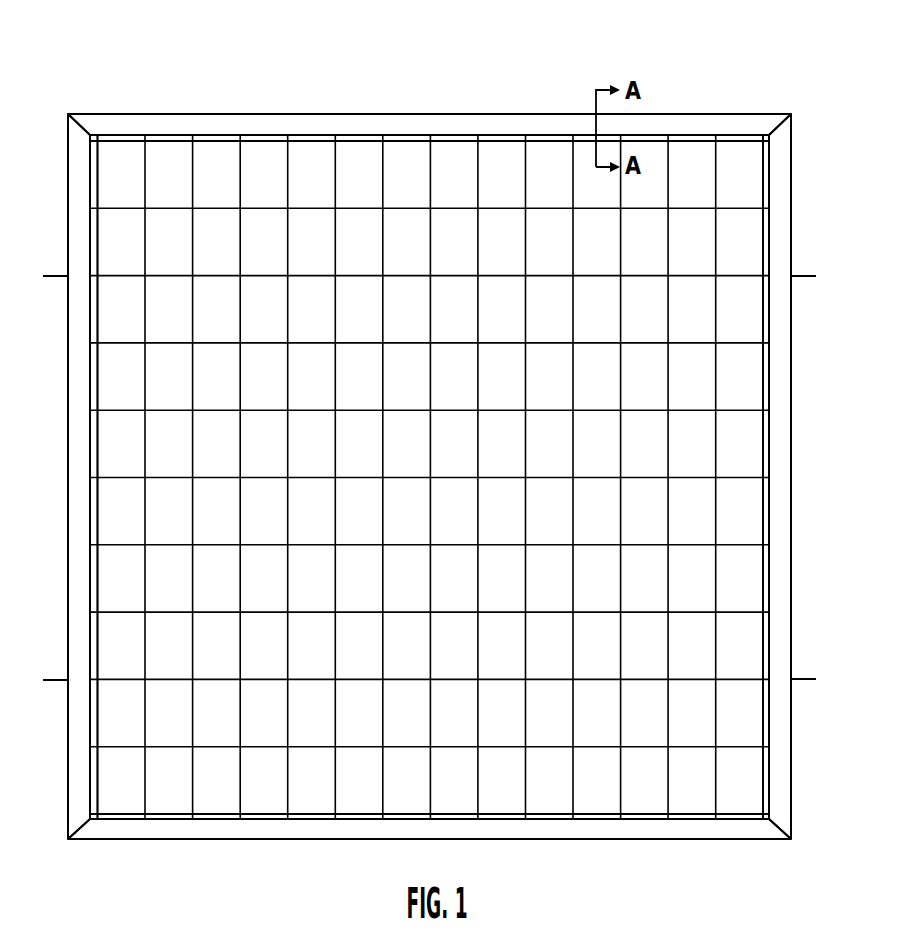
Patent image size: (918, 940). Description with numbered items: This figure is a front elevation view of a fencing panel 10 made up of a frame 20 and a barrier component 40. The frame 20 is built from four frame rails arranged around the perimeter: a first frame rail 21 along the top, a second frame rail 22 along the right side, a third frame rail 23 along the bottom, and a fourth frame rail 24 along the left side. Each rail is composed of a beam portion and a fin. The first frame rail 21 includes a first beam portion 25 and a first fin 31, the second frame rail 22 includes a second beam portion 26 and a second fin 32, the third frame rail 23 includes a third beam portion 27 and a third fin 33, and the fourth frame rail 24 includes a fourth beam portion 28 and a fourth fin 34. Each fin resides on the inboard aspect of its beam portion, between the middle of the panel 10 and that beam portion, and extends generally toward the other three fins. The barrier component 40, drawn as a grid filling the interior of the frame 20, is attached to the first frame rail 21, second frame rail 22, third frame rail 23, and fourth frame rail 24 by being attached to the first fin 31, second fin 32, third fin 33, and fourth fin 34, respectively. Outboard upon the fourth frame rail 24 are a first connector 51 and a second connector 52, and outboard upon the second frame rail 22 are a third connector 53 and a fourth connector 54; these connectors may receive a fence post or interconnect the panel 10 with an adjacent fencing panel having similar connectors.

The fencing panel 10 is at (705, 45).
The frame 20 is at (362, 125).
The first frame rail 21 is at (124, 125).
The second frame rail 22 is at (782, 373).
The third frame rail 23 is at (156, 830).
The fourth frame rail 24 is at (78, 371).
The first beam portion 25 is at (204, 125).
The second beam portion 26 is at (782, 440).
The third beam portion 27 is at (258, 830).
The fourth beam portion 28 is at (78, 451).
The first fin 31 is at (278, 142).
The second fin 32 is at (762, 508).
The third fin 33 is at (556, 814).
The fourth fin 34 is at (96, 533).
The barrier component 40 is at (163, 746).
The first connector 51 is at (53, 274).
The second connector 52 is at (53, 678).
The third connector 53 is at (806, 274).
The fourth connector 54 is at (806, 677).